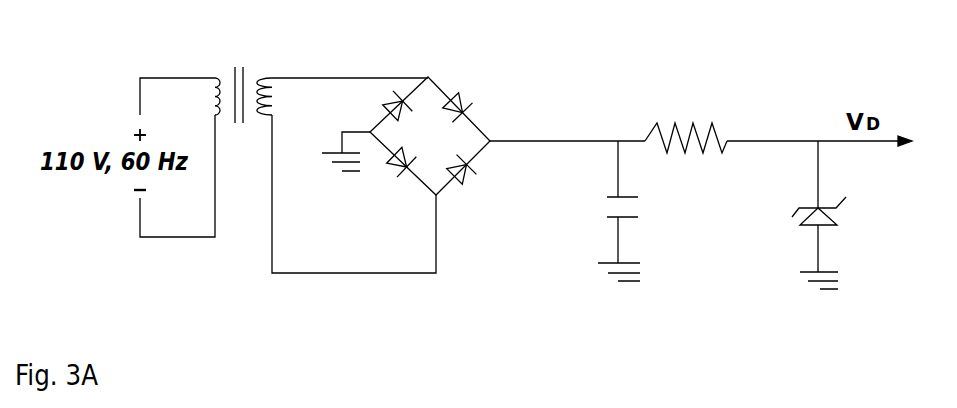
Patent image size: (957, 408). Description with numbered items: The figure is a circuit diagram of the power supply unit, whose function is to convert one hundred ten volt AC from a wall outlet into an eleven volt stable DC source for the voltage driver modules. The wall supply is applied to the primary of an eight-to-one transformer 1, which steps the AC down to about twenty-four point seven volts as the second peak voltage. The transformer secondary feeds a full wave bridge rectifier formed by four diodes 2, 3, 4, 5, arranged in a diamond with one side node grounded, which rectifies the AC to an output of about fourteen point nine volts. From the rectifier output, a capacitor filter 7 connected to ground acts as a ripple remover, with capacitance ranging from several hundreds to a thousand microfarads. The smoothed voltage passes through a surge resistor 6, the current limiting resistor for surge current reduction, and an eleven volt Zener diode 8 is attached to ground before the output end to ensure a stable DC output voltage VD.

The 8:1 transformer 1 is at (252, 60).
The bridge rectifier diode 2 is at (385, 107).
The bridge rectifier diode 3 is at (464, 106).
The bridge rectifier diode 4 is at (398, 182).
The bridge rectifier diode 5 is at (463, 186).
The surge resistor 6 is at (686, 125).
The capacitor filter 7 is at (634, 211).
The 11V Zener diode 8 is at (839, 215).